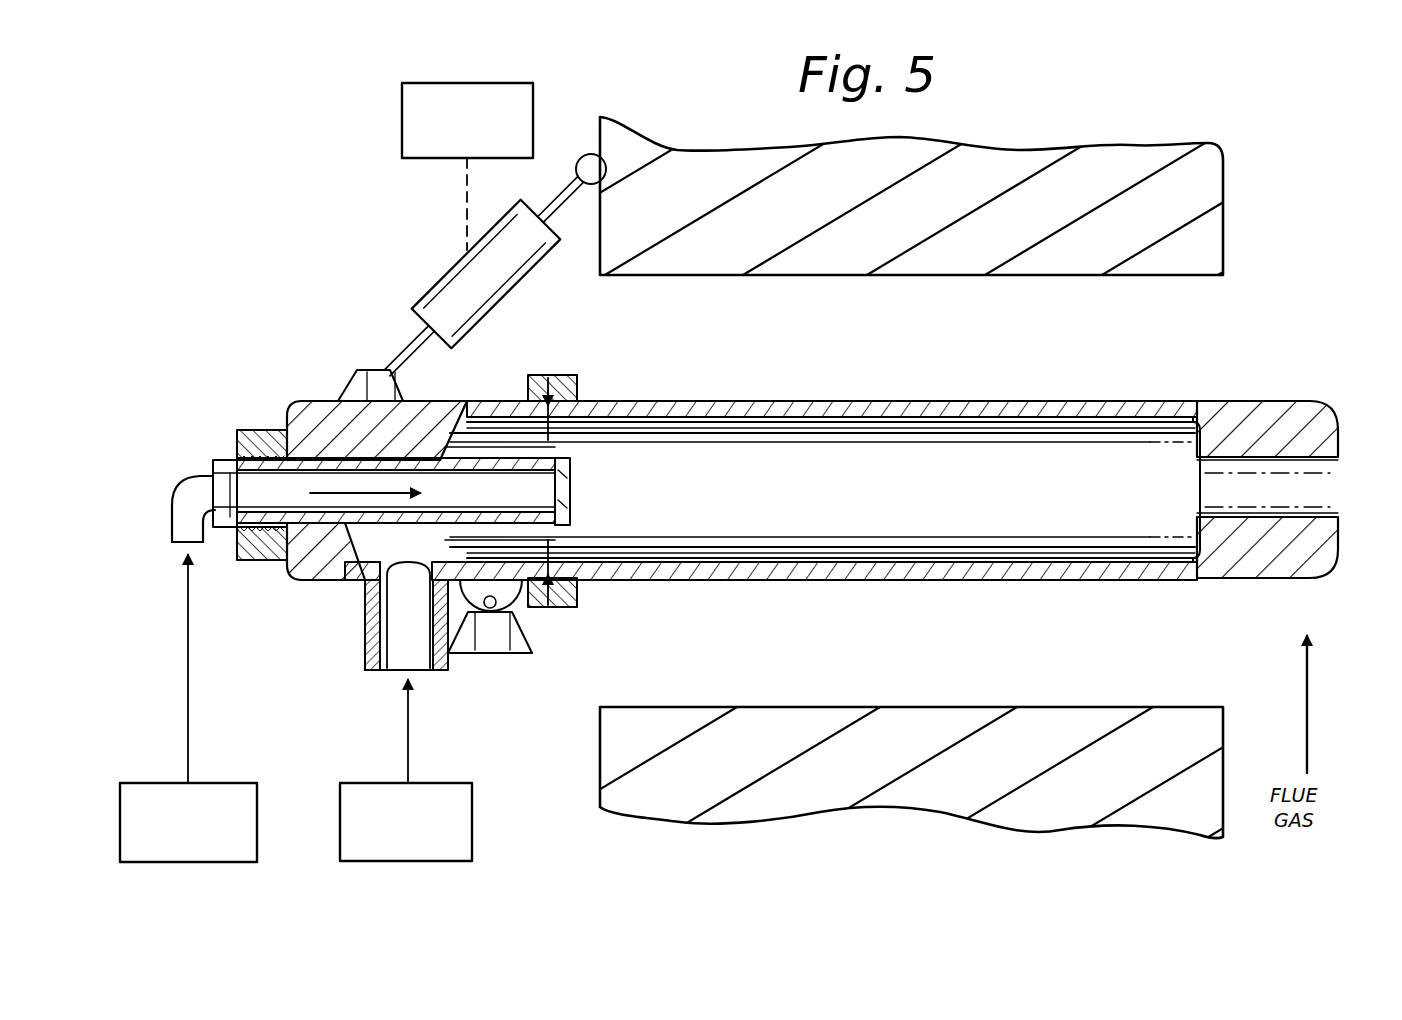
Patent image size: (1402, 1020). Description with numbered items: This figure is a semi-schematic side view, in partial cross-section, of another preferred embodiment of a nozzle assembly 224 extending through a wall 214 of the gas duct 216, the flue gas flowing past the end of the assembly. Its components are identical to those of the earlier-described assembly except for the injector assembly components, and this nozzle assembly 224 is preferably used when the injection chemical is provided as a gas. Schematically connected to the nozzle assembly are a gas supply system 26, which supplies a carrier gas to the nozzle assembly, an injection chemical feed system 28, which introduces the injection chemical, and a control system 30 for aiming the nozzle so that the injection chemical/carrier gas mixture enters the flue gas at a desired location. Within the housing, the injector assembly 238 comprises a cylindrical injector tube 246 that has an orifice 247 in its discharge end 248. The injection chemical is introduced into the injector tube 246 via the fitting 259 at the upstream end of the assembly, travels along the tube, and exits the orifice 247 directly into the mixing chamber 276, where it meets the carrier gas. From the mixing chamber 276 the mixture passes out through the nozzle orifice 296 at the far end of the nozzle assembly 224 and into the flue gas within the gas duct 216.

The gas supply system 26 is at (421, 831).
The injection chemical feed system 28 is at (204, 835).
The control system 30 is at (485, 129).
The wall 214 is at (937, 221).
The gas duct 216 is at (1323, 118).
The nozzle assembly 224 is at (292, 392).
The injector assembly 238 is at (222, 438).
The cylindrical injector tube 246 is at (518, 534).
The orifice 247 is at (586, 494).
The discharge end 248 is at (582, 466).
The fitting 259 is at (171, 482).
The mixing chamber 276 is at (962, 517).
The nozzle orifice 296 is at (1337, 498).